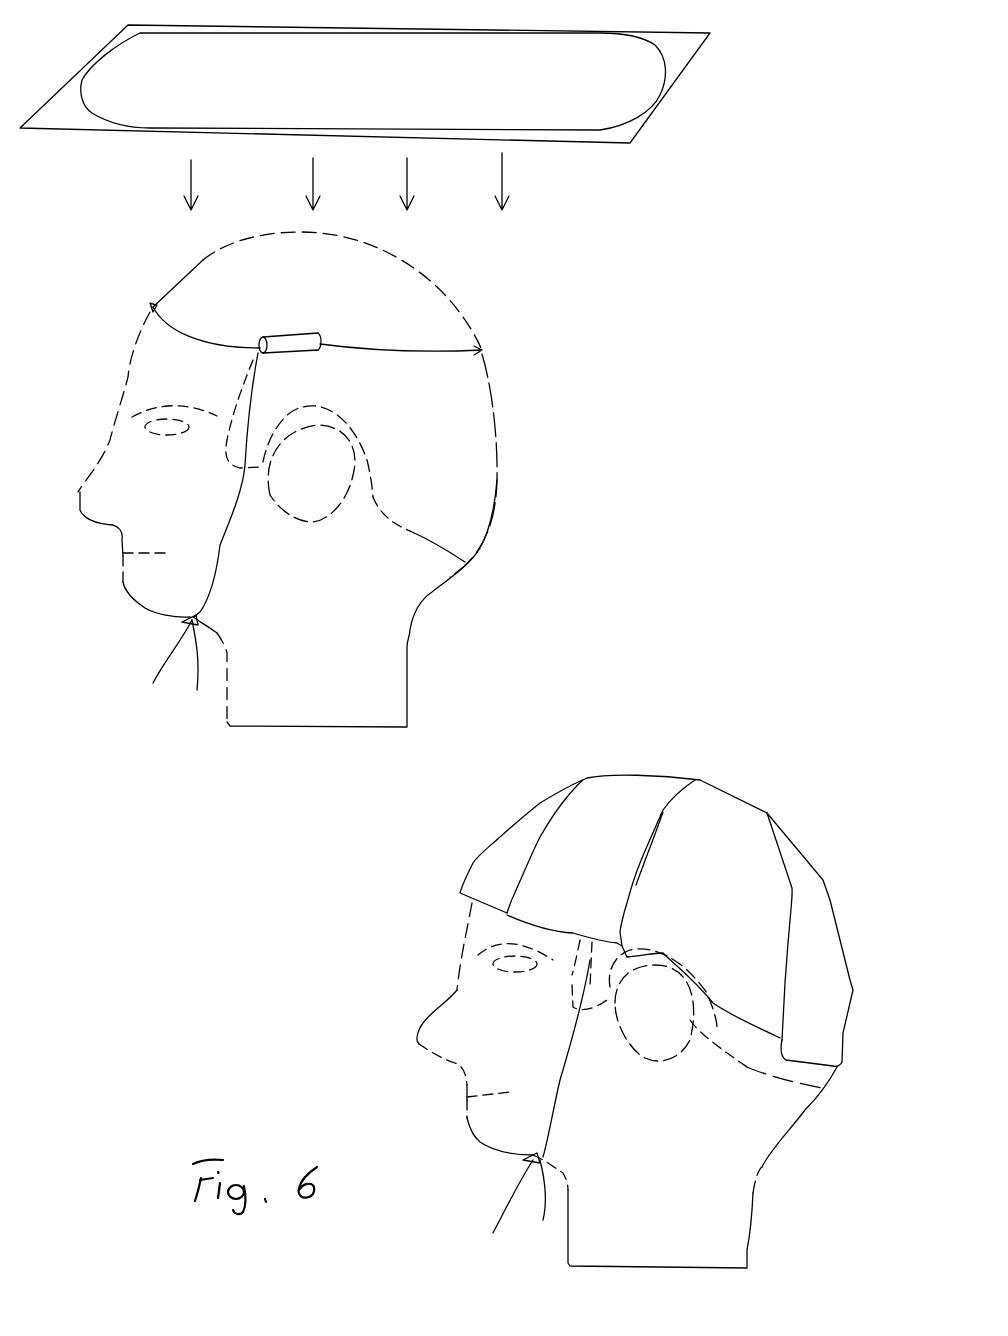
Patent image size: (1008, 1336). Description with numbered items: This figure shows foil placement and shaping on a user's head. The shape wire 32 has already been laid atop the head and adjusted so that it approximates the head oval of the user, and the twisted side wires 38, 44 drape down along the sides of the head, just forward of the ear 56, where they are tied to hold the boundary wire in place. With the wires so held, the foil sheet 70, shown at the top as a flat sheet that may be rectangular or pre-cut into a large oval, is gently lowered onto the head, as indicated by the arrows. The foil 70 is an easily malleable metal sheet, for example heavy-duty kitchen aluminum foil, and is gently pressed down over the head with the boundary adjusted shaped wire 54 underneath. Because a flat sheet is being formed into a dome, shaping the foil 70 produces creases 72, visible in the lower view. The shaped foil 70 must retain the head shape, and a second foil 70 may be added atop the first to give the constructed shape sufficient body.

The foil sheet 70 is at (648, 80).
The creases 72 is at (667, 810).
The shape wire 32 is at (433, 340).
The boundary adjusted shaped wire 54 is at (388, 342).
The ear 56 is at (310, 507).
The side wire 38 is at (146, 665).
The side wire 44 is at (349, 924).